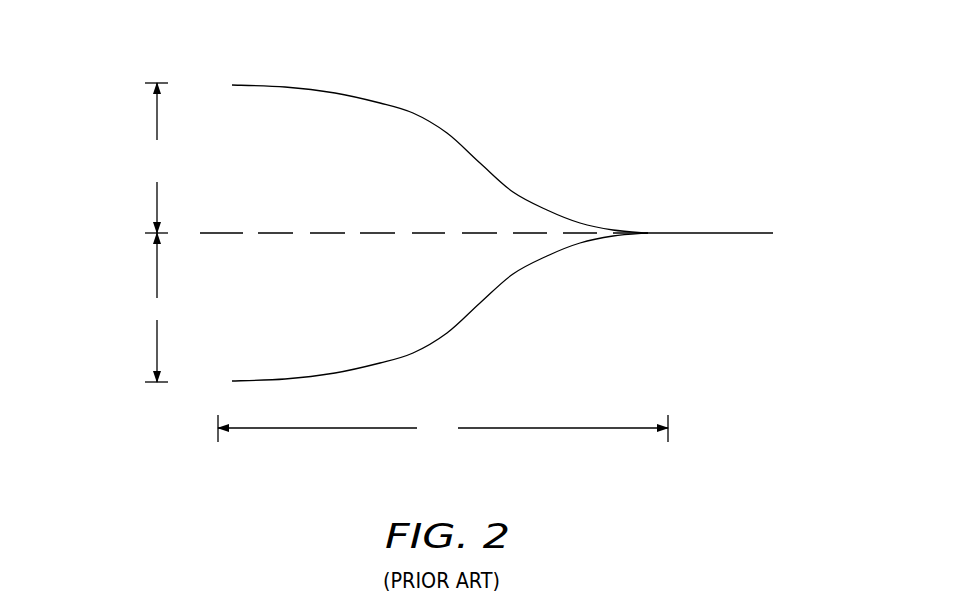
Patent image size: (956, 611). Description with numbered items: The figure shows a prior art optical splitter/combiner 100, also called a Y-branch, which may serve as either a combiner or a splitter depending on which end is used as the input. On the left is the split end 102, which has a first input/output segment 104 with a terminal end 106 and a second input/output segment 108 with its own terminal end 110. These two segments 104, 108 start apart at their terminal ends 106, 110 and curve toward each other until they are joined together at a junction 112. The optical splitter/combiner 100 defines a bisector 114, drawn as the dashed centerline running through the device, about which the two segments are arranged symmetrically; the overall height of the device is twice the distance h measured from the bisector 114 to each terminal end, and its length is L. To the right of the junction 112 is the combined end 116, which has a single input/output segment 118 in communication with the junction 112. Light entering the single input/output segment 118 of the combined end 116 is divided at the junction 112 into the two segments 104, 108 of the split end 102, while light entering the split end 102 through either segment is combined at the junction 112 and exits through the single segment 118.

The optical splitter/combiner 100 is at (545, 48).
The split end 102 is at (120, 237).
The first input/output segment 104 is at (383, 100).
The terminal end 106 is at (232, 85).
The second input/output segment 108 is at (450, 340).
The terminal end 110 is at (233, 383).
The junction 112 is at (648, 233).
The bisector 114 is at (335, 233).
The combined end 116 is at (815, 236).
The single input/output segment 118 is at (760, 233).